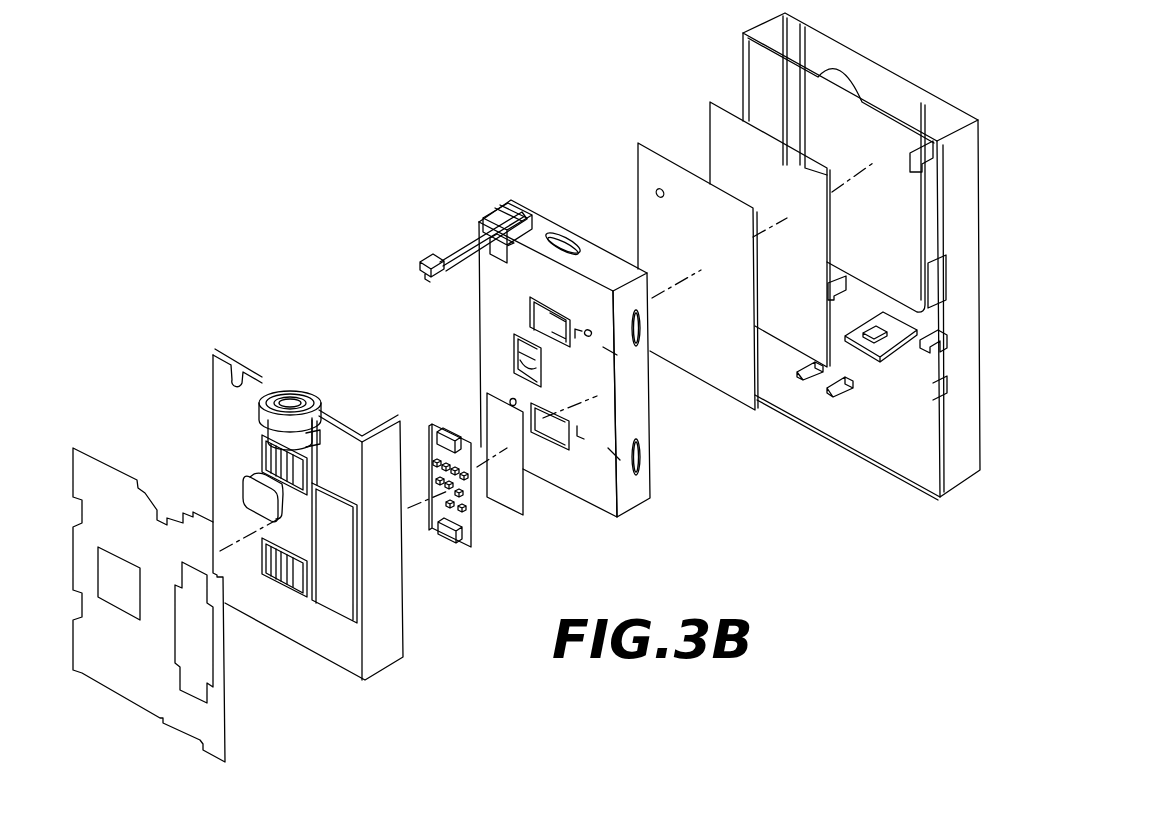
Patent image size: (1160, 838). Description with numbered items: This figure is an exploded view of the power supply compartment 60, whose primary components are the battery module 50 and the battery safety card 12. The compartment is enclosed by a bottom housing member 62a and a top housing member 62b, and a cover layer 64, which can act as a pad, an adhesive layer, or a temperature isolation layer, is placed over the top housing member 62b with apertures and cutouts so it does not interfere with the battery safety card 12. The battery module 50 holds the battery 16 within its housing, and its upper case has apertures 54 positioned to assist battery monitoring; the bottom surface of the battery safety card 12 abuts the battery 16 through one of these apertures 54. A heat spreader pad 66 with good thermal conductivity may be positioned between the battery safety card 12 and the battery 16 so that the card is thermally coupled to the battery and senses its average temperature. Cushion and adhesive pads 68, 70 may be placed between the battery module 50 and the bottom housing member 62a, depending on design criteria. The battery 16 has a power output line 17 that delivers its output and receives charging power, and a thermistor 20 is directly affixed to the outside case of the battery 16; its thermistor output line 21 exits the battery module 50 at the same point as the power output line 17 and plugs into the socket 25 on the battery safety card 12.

The power supply compartment 60 is at (919, 50).
The bottom housing member 62a is at (850, 449).
The top housing member 62b is at (377, 658).
The cover layer 64 is at (136, 682).
The heat spreader pad 66 is at (503, 491).
The cushion pad 68 is at (716, 116).
The adhesive pad 70 is at (644, 162).
The battery module 50 is at (646, 481).
The aperture 54 is at (553, 426).
The thermistor 20 is at (527, 363).
The battery 16 is at (500, 214).
The power output line 17 is at (449, 252).
The thermistor output line 21 is at (421, 278).
The battery safety card 12 is at (470, 541).
The socket 25 is at (438, 435).